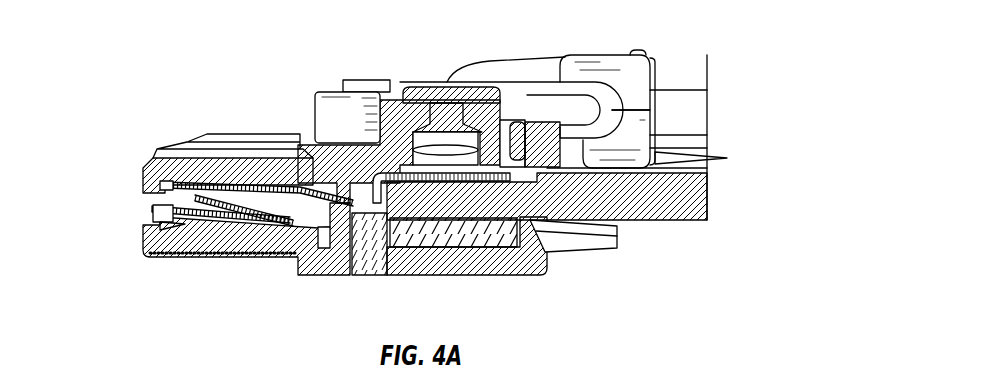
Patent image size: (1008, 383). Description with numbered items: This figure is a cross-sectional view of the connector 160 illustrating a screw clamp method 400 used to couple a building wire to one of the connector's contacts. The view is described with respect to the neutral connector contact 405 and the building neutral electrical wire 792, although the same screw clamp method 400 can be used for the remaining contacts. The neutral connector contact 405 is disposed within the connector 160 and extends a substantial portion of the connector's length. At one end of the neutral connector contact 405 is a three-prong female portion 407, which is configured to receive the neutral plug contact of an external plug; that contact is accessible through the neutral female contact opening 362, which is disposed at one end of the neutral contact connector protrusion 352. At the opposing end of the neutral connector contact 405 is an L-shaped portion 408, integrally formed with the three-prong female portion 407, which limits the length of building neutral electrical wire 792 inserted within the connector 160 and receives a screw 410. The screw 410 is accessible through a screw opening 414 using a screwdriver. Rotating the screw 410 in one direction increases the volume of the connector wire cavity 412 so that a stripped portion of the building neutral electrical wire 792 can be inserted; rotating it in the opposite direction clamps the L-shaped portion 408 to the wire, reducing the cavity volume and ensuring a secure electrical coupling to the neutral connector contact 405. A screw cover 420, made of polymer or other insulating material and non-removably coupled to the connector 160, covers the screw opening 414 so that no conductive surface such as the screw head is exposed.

The screw clamp method 400 is at (174, 70).
The neutral contact connector protrusion 352 is at (148, 175).
The neutral female contact opening 362 is at (140, 210).
The connector 160 is at (168, 284).
The three-prong female portion 407 is at (223, 205).
The neutral connector contact 405 is at (347, 210).
The connector wire cavity 412 is at (420, 213).
The building neutral electrical wire 792 is at (530, 197).
The L-shaped portion 408 is at (372, 188).
The screw 410 is at (430, 160).
The screw cover 420 is at (447, 143).
The screw opening 414 is at (462, 133).